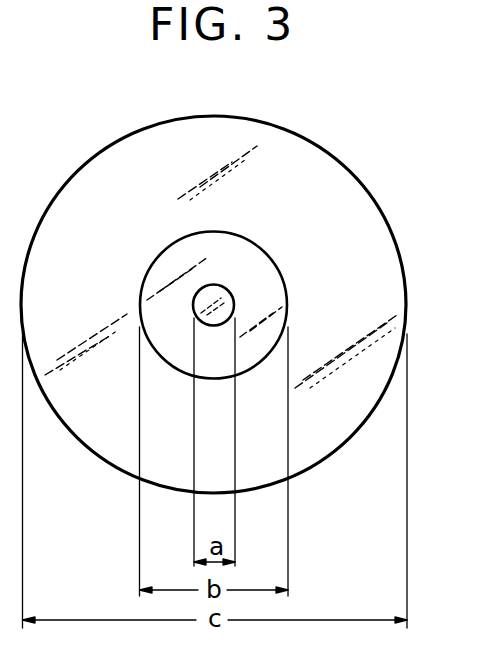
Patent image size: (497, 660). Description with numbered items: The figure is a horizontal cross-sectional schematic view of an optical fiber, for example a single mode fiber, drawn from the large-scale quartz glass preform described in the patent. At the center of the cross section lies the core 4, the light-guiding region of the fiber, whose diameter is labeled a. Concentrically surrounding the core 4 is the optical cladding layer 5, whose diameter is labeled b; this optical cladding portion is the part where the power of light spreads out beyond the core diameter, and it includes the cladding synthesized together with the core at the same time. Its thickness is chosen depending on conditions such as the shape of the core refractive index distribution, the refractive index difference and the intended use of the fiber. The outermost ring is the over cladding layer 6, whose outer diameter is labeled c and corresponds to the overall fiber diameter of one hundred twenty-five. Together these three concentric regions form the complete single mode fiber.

The core 4 is at (230, 303).
The optical cladding layer 5 is at (262, 270).
The over cladding layer 6 is at (325, 185).